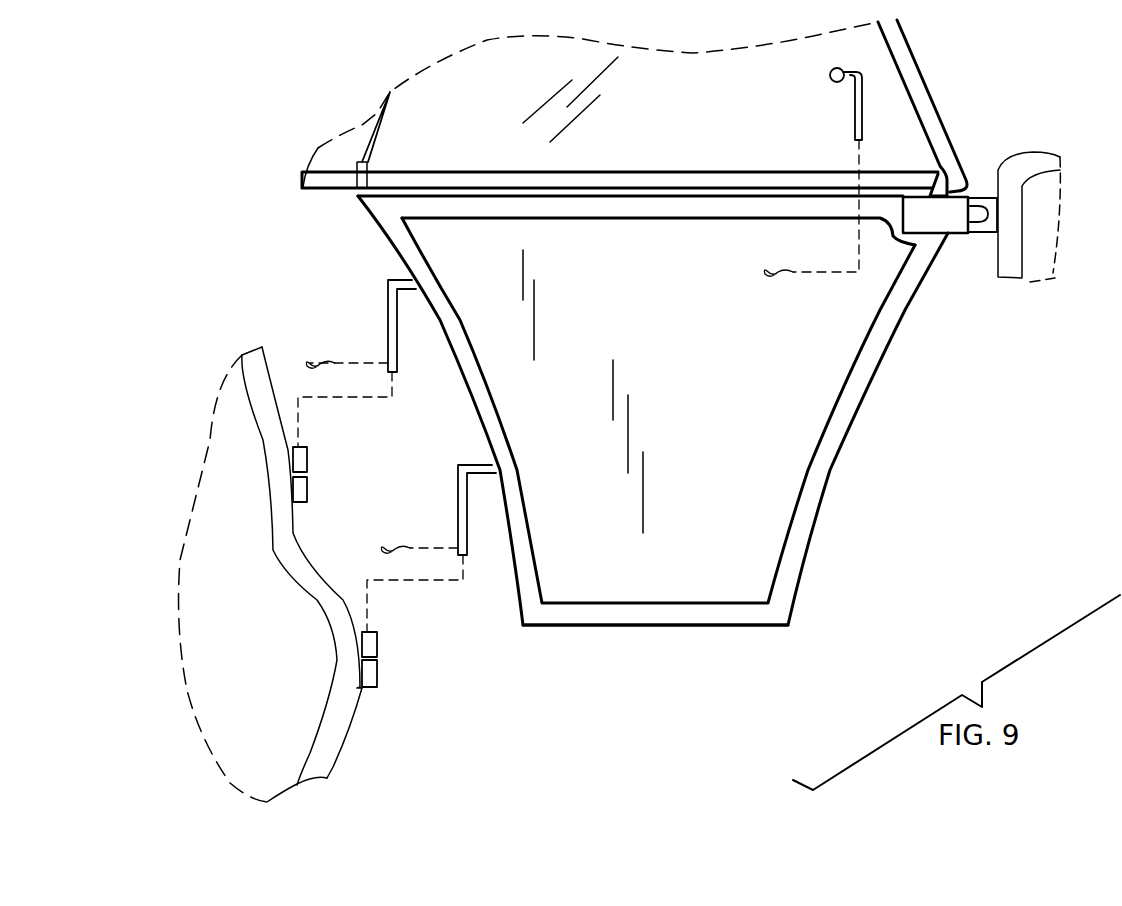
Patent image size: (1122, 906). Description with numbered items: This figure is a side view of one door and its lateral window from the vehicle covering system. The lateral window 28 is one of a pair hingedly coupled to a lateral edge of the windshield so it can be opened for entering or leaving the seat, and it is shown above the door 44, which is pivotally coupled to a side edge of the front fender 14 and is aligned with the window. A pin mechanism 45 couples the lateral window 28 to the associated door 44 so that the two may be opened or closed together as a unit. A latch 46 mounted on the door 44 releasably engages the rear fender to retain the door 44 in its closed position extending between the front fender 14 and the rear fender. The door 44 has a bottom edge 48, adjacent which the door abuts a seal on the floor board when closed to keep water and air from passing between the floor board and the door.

The front fender 14 is at (307, 572).
The lateral window 28 is at (903, 117).
The door 44 is at (773, 512).
The pin mechanism 45 is at (862, 100).
The latch 46 is at (943, 222).
The bottom edge 48 is at (662, 627).